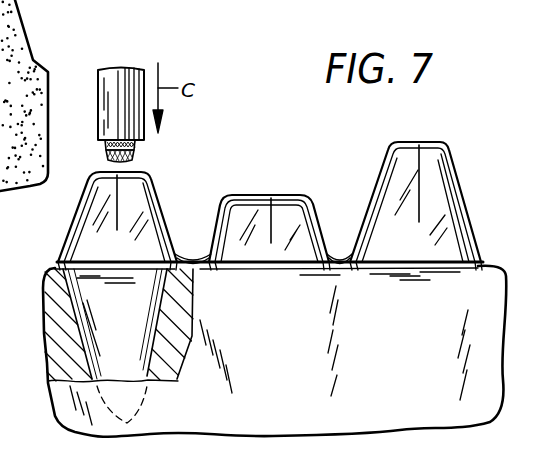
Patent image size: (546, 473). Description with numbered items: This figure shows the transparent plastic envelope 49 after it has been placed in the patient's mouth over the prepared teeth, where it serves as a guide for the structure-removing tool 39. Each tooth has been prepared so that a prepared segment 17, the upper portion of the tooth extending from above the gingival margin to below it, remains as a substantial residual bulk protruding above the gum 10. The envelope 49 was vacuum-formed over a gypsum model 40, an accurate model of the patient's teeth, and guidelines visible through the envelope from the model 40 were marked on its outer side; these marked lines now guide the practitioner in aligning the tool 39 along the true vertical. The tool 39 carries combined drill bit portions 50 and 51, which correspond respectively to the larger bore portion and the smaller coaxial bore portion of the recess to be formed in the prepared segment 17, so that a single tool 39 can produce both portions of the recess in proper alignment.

The fixture block 10 is at (62, 404).
The prepared segment 17 is at (82, 231).
The structure-removing tool 39 is at (132, 68).
The gypsum model 40 is at (13, 48).
The transparent plastic envelope 49 is at (302, 190).
The drill bit portion 50 is at (135, 147).
The drill bit portion 51 is at (132, 157).